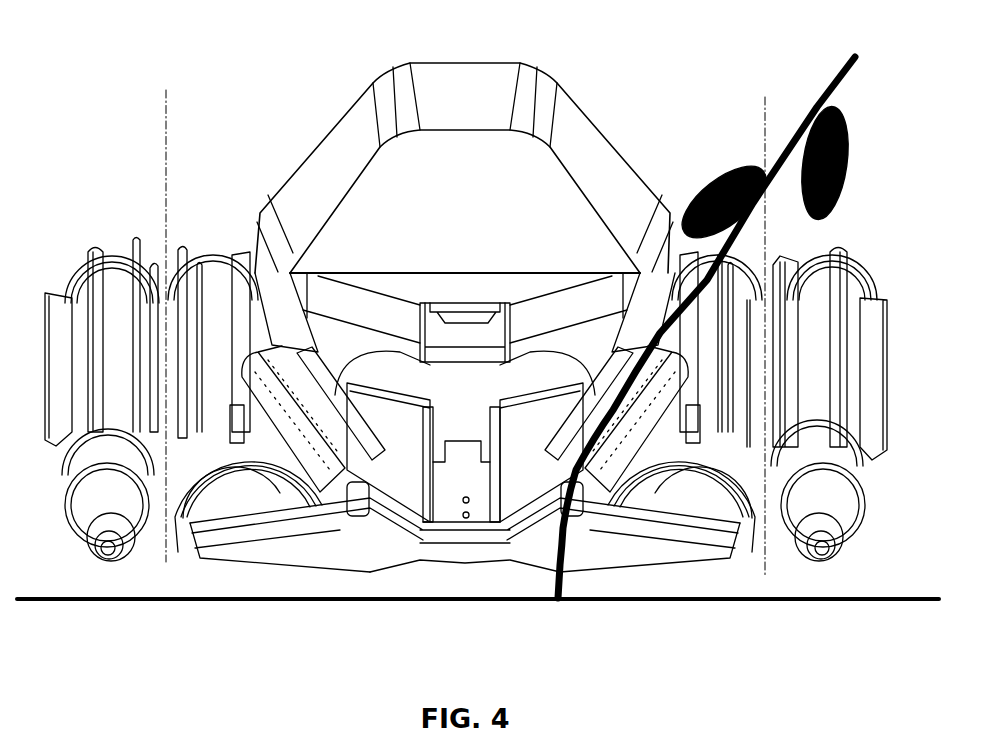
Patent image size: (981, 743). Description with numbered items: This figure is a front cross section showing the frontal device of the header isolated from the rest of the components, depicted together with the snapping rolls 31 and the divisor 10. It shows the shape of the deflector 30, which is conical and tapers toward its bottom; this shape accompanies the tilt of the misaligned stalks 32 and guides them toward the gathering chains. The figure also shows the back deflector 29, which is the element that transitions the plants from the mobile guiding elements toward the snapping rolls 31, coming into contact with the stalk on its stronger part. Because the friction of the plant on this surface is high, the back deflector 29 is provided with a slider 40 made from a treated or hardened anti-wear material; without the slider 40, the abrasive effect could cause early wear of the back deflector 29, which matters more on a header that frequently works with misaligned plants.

The divisor 10 is at (330, 157).
The back deflector 29 is at (232, 500).
The deflector 30 is at (535, 458).
The snapping rolls 31 is at (213, 318).
The misaligned stalks 32 is at (812, 106).
The slider 40 is at (313, 523).